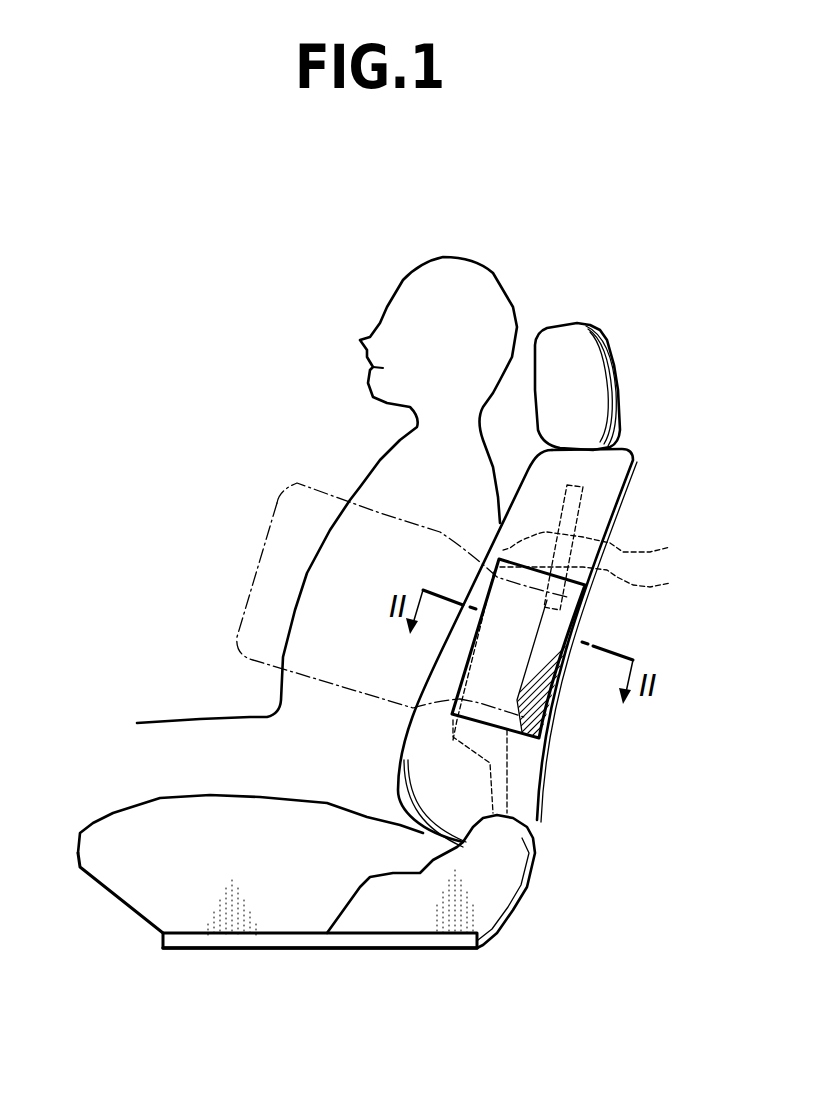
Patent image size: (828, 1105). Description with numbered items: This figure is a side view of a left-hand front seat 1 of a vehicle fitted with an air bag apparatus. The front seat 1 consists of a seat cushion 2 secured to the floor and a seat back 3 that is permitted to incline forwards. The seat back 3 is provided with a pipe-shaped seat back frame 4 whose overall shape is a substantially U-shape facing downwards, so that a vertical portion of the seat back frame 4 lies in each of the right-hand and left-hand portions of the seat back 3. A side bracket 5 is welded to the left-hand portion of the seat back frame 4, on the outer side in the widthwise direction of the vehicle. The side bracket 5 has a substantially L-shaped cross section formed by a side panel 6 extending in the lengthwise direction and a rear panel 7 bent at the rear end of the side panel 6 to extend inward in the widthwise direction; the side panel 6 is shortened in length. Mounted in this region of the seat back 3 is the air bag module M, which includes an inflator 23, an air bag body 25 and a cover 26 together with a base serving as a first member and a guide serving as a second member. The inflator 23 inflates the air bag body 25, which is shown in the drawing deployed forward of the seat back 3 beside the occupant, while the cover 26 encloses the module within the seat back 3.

The front seat 1 is at (557, 808).
The seat cushion 2 is at (113, 813).
The seat back 3 is at (637, 452).
The seat back frame 4 is at (577, 508).
The side bracket 5 is at (693, 517).
The side panel 6 is at (597, 544).
The rear panel 7 is at (572, 653).
The inflator 23 is at (555, 708).
The air bag body 25 is at (257, 573).
The cover 26 is at (543, 757).
The air bag module M is at (576, 701).